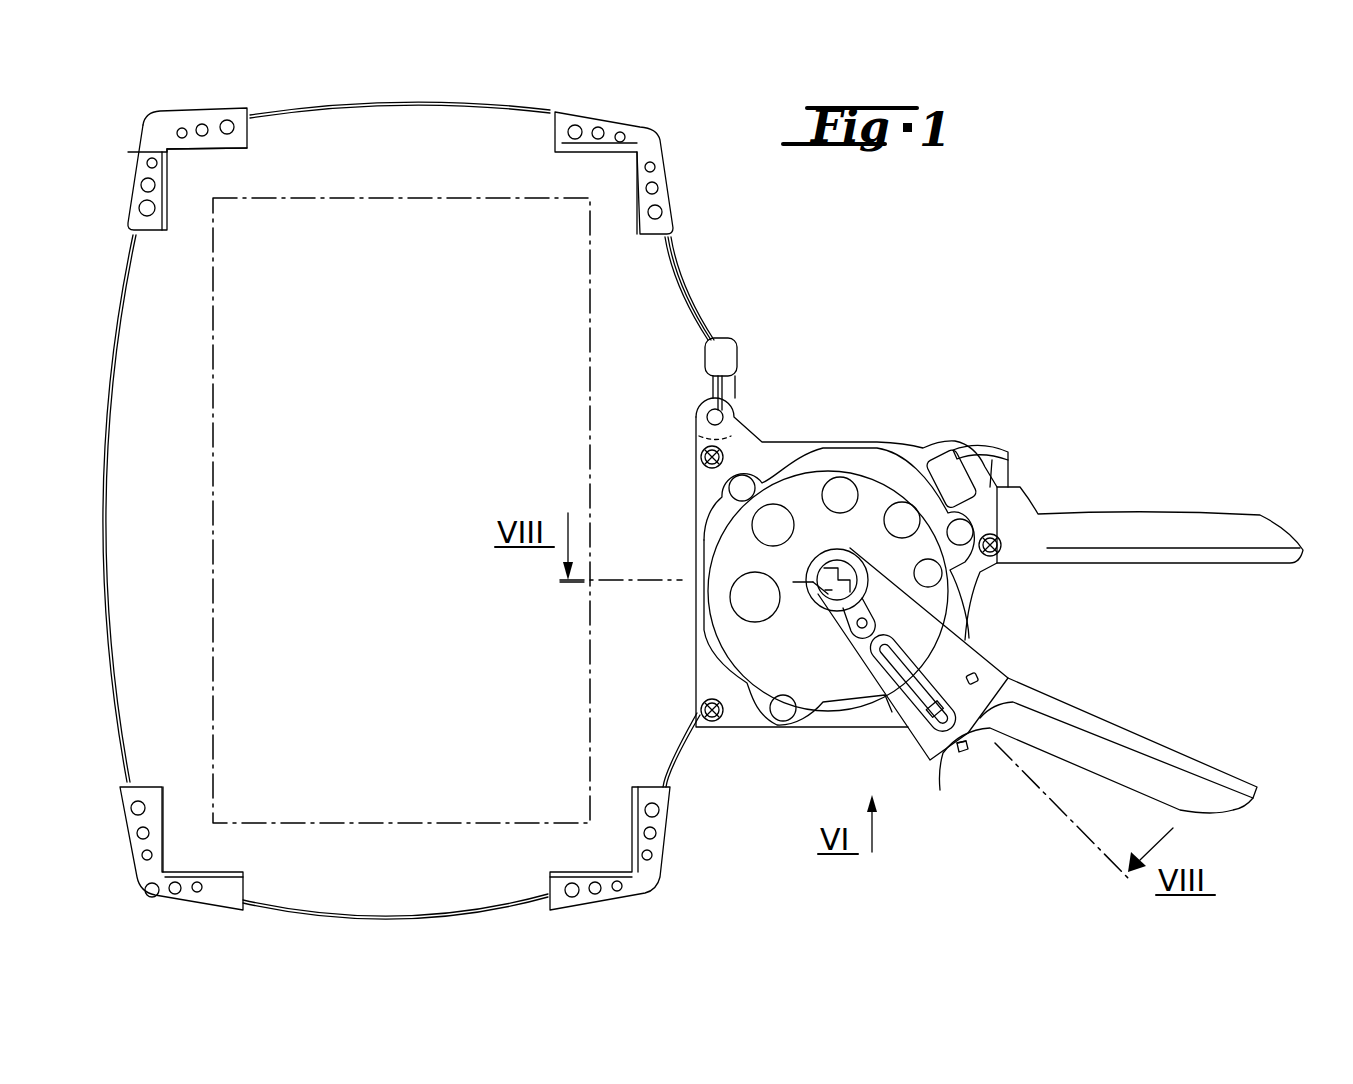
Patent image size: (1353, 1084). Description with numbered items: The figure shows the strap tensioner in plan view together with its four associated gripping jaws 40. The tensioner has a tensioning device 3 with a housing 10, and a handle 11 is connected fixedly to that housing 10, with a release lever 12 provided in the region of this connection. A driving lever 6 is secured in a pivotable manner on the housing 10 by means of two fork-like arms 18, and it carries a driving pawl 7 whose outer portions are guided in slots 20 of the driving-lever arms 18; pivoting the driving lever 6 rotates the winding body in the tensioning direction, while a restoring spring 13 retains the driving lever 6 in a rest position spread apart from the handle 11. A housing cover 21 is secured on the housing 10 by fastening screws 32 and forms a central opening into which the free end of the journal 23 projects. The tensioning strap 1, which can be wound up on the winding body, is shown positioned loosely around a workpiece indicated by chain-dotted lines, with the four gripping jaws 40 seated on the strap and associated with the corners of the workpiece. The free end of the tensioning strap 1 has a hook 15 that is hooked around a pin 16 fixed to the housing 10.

The tensioning strap 1 is at (405, 103).
The tensioning device 3 is at (852, 413).
The driving lever 6 is at (1187, 790).
The driving pawl 7 is at (957, 752).
The housing 10 is at (800, 728).
The handle 11 is at (1185, 528).
The release lever 12 is at (985, 450).
The restoring spring 13 is at (872, 618).
The hook 15 is at (725, 345).
The pin 16 is at (706, 408).
The driving-lever arms 18 is at (937, 652).
The slots 20 is at (877, 647).
The housing cover 21 is at (768, 458).
The journal 23 is at (825, 593).
The fastening screws 32 is at (702, 452).
The gripping jaws 40 is at (193, 197).